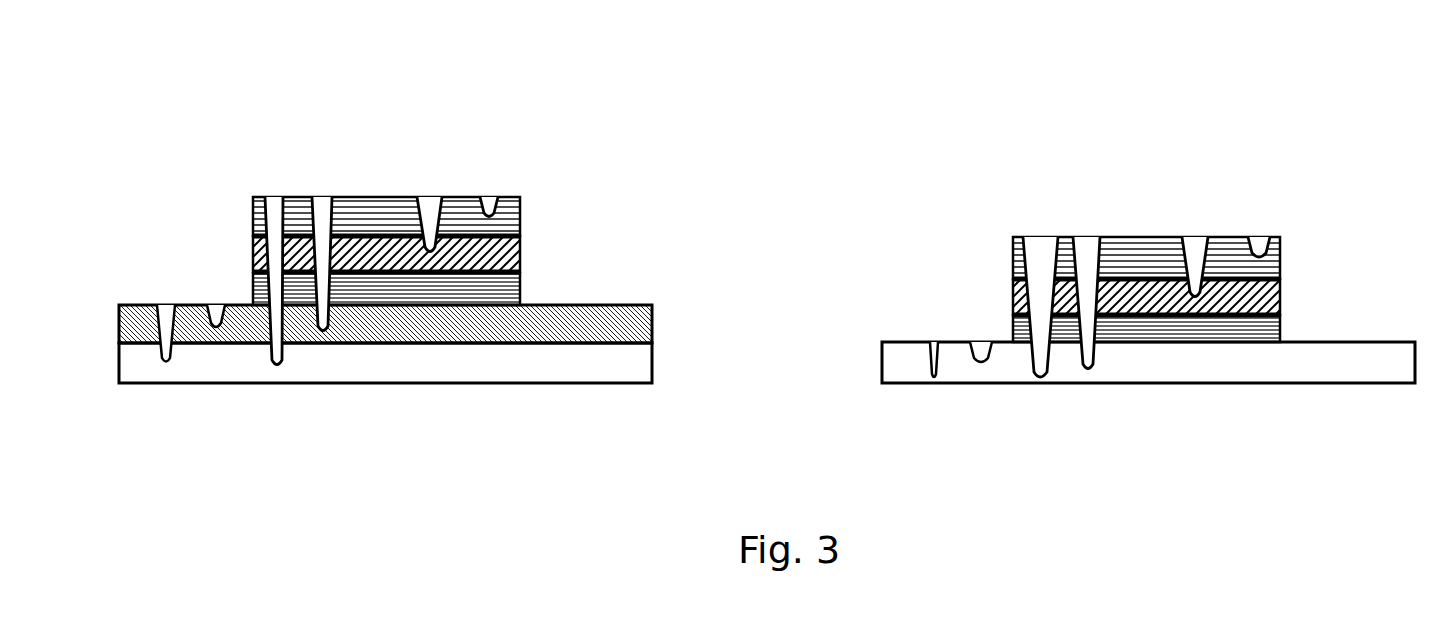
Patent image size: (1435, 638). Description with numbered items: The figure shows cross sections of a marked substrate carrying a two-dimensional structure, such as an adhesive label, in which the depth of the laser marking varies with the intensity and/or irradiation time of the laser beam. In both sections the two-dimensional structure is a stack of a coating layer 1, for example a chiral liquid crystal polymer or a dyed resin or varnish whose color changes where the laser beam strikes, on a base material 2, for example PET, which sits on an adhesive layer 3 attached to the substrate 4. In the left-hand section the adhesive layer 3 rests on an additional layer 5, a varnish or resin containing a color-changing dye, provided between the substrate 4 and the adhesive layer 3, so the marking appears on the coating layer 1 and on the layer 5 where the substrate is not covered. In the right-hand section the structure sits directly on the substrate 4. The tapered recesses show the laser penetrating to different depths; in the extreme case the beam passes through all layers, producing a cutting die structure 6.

The coating layer 1 is at (530, 217).
The base material 2 is at (530, 255).
The adhesive layer 3 is at (530, 288).
The substrate 4 is at (862, 380).
The additional layer 5 is at (672, 331).
The cutting die structure 6 is at (1040, 270).